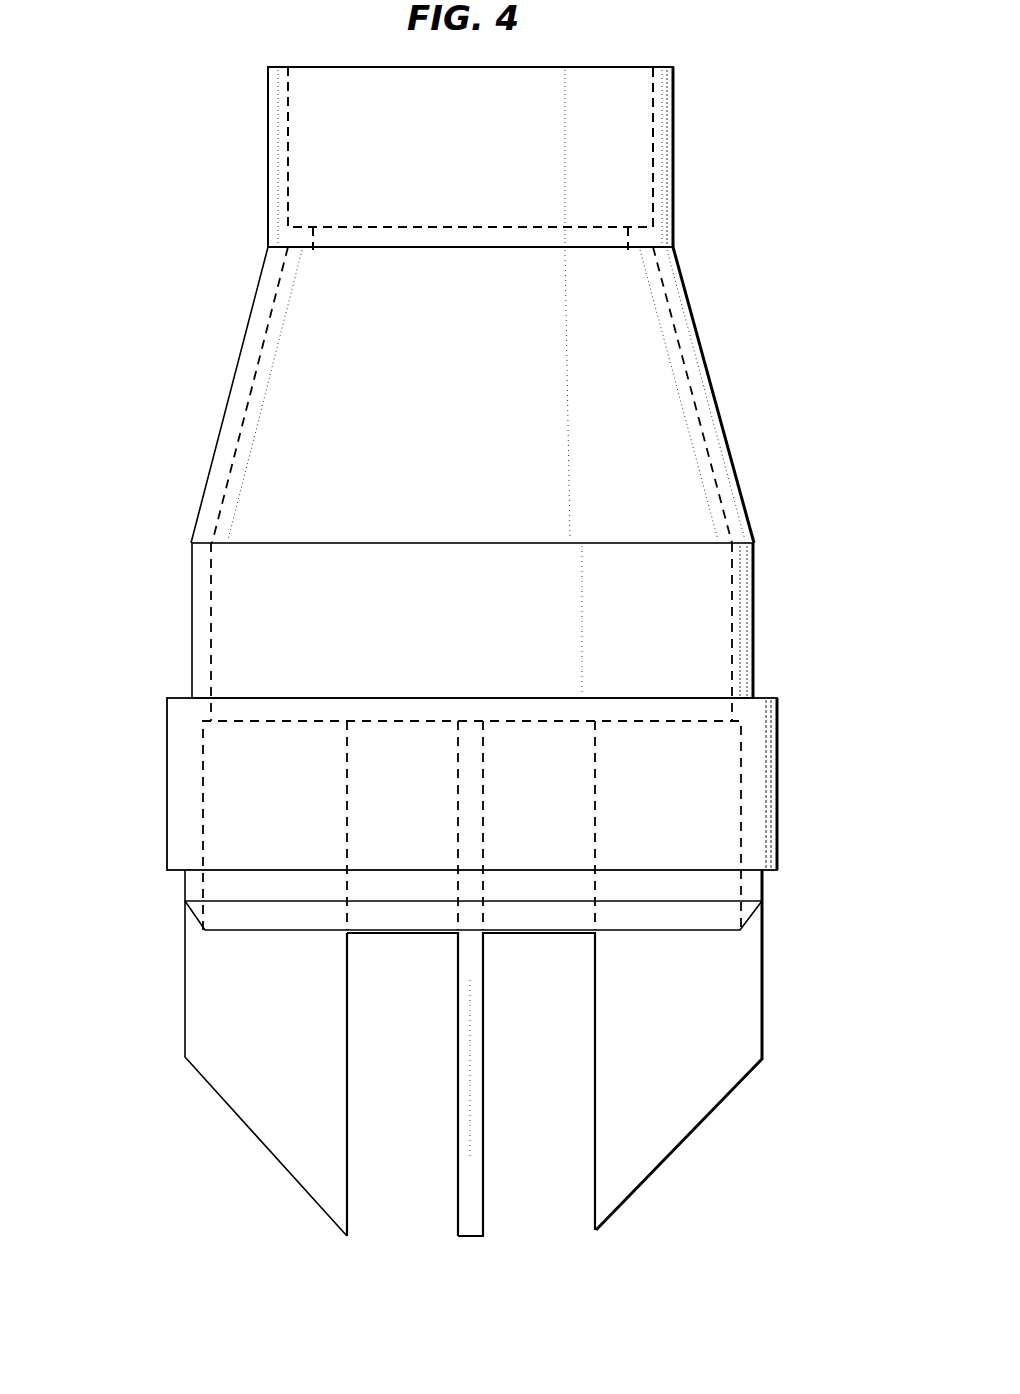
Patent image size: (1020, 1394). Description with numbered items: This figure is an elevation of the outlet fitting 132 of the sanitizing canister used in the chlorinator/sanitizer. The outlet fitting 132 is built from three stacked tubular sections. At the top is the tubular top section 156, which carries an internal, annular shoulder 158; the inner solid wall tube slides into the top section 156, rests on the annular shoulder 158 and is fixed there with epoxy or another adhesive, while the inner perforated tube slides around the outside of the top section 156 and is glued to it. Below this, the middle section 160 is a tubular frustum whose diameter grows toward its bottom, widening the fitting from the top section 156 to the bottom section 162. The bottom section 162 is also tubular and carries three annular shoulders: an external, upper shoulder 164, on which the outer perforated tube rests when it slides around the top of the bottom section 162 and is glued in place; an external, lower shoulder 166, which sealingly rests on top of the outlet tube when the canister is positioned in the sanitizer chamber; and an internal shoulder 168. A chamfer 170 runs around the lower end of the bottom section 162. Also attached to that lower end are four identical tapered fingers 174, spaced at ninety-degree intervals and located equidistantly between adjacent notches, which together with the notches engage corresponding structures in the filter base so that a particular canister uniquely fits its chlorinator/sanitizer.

The outlet fitting 132 is at (153, 338).
The top section 156 is at (675, 155).
The internal annular shoulder 158 is at (628, 234).
The middle section 160 is at (712, 393).
The bottom section 162 is at (188, 641).
The external upper shoulder 164 is at (765, 698).
The external lower shoulder 166 is at (762, 873).
The internal shoulder 168 is at (740, 724).
The chamfer 170 is at (185, 913).
The tapered fingers 174 is at (596, 1232).